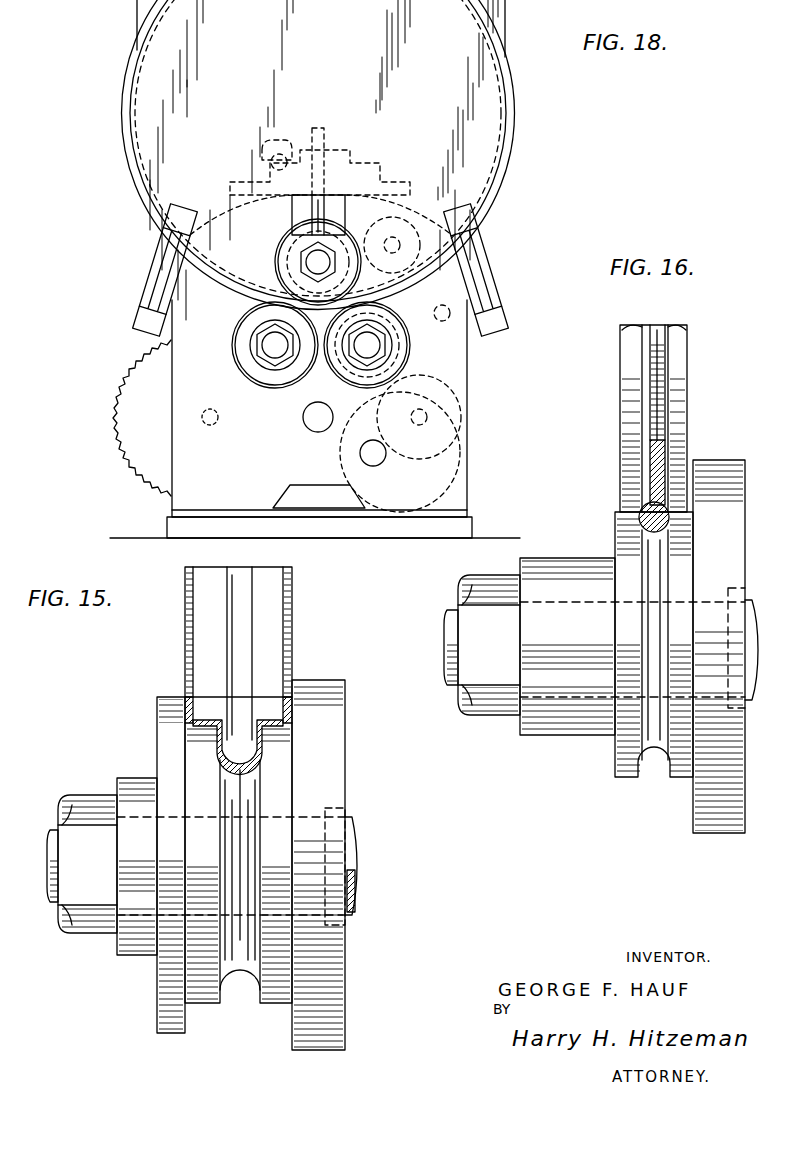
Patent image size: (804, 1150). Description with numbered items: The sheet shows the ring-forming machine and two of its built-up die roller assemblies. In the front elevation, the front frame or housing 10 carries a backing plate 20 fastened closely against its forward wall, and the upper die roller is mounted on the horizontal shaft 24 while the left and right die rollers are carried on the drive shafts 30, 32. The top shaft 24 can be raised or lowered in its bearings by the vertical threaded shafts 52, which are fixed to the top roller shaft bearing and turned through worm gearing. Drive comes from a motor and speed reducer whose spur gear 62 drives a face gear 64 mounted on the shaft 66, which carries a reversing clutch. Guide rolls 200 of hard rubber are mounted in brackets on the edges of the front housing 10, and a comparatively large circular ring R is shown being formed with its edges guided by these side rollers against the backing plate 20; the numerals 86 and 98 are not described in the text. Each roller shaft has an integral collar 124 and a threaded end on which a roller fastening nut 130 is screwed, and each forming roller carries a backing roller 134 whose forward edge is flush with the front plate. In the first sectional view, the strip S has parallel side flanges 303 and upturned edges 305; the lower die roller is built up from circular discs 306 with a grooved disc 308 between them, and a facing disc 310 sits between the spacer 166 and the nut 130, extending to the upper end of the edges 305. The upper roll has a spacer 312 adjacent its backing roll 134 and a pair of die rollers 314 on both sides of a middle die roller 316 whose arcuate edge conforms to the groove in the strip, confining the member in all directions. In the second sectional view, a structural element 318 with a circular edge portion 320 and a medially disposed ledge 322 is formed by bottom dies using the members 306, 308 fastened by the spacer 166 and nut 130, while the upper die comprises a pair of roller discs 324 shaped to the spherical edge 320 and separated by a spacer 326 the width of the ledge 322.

In FIG. 18, the front frame or housing 10 is at (185, 486).
In FIG. 18, the backing plate 20 is at (318, 160).
In FIG. 18, the horizontal shaft 24 is at (312, 264).
In FIG. 18, the drive shaft 30 is at (275, 350).
In FIG. 18, the drive shaft 32 is at (367, 350).
In FIG. 18, the vertical threaded shaft 52 is at (326, 135).
In FIG. 18, the spur gear 62 is at (376, 465).
In FIG. 18, the face gear 64 is at (452, 390).
In FIG. 18, the shaft 66 is at (428, 420).
In FIG. 18, the ratchet wheel 86 is at (130, 441).
In FIG. 18, the pin 98 is at (310, 428).
In FIG. 15, the collar 124 is at (340, 858).
In FIG. 16, the roller fastening nut 130 is at (475, 712).
In FIG. 15, the roller fastening nut 130 is at (70, 935).
In FIG. 18, the backing roller 134 is at (238, 355).
In FIG. 16, the backing roller 134 is at (713, 835).
In FIG. 15, the backing roller 134 is at (318, 1050).
In FIG. 16, the spacer 166 is at (538, 732).
In FIG. 15, the spacer 166 is at (130, 950).
In FIG. 18, the guide rolls 200 is at (148, 292).
In FIG. 18, the circular ring R is at (130, 182).
In FIG. 15, the strip S is at (240, 770).
In FIG. 15, the parallel side flanges 303 is at (200, 732).
In FIG. 15, the upturned edges 305 is at (190, 718).
In FIG. 16, the circular discs 306 is at (618, 766).
In FIG. 15, the circular discs 306 is at (258, 1050).
In FIG. 16, the disc having an arcuate groove 308 is at (656, 765).
In FIG. 15, the disc having an arcuate groove 308 is at (250, 970).
In FIG. 15, the facing disc 310 is at (175, 1030).
In FIG. 15, the spacer 312 is at (285, 618).
In FIG. 15, the die rollers 314 is at (270, 640).
In FIG. 15, the middle die roller 316 is at (232, 678).
In FIG. 16, the structural element 318 is at (639, 434).
In FIG. 16, the circular edge portion 320 is at (640, 502).
In FIG. 16, the medially disposed ledge 322 is at (650, 449).
In FIG. 16, the roller discs 324 is at (680, 444).
In FIG. 16, the spacer 326 is at (655, 400).